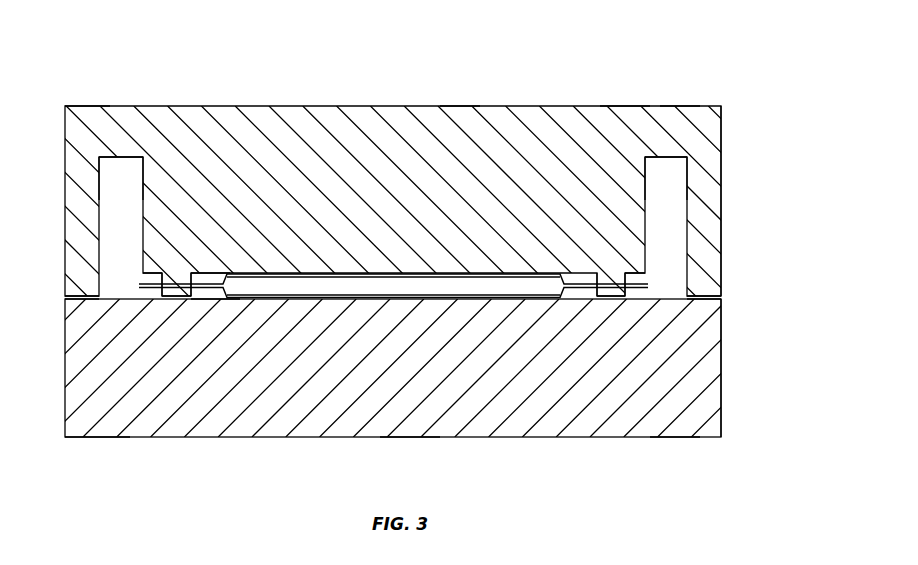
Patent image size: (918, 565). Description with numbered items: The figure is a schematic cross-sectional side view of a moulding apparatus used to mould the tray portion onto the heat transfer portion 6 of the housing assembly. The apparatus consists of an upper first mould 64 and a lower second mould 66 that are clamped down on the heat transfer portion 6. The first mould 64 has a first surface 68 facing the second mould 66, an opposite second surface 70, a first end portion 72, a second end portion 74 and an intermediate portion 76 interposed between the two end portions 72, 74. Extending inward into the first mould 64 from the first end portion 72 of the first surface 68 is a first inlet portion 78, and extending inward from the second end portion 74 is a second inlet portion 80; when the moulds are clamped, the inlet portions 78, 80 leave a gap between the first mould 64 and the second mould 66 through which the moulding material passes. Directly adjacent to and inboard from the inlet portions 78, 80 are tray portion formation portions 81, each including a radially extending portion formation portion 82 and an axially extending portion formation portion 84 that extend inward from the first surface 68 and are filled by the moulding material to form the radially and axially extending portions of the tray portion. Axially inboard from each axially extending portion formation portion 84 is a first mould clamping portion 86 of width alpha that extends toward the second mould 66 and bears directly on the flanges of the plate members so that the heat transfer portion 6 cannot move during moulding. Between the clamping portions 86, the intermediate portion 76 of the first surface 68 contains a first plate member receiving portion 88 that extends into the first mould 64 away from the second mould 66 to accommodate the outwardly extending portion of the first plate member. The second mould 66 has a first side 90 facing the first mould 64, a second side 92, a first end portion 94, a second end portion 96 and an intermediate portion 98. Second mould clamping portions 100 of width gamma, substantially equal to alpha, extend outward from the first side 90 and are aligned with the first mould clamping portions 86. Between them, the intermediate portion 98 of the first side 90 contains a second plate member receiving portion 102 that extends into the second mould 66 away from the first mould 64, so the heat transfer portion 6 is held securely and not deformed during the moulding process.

The heat transfer portion 6 is at (379, 244).
The first mould 64 is at (552, 141).
The second mould 66 is at (644, 397).
The first surface 68 is at (721, 287).
The second surface 70 is at (622, 106).
The first end portion 72 is at (98, 107).
The second end portion 74 is at (678, 106).
The intermediate portion 76 is at (460, 106).
The first inlet portion 78 is at (82, 294).
The second inlet portion 80 is at (698, 291).
The tray portion formation portion 81 is at (125, 157).
The radially extending portion formation portion 82 is at (117, 157).
The axially extending portion formation portion 84 is at (150, 272).
The first mould clamping portion 86 is at (172, 284).
The first plate member receiving portion 88 is at (218, 274).
The first side 90 is at (719, 299).
The second side 92 is at (712, 437).
The first end portion 94 is at (98, 437).
The second end portion 96 is at (673, 437).
The intermediate portion 98 is at (412, 437).
The second mould clamping portion 100 is at (185, 284).
The second plate member receiving portion 102 is at (218, 303).